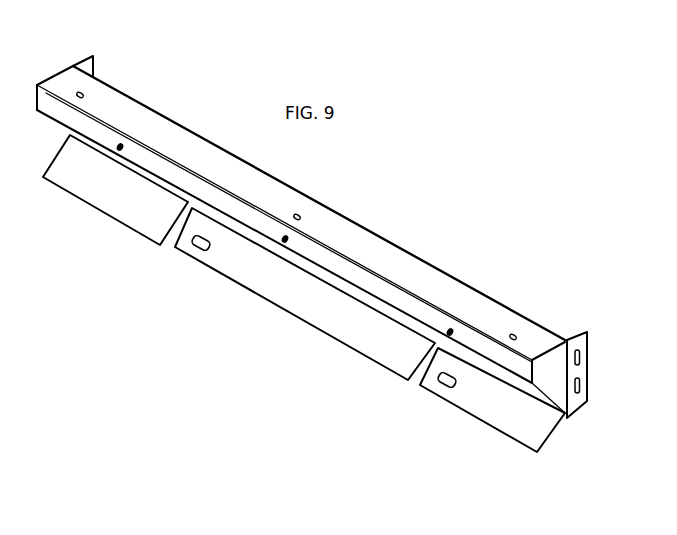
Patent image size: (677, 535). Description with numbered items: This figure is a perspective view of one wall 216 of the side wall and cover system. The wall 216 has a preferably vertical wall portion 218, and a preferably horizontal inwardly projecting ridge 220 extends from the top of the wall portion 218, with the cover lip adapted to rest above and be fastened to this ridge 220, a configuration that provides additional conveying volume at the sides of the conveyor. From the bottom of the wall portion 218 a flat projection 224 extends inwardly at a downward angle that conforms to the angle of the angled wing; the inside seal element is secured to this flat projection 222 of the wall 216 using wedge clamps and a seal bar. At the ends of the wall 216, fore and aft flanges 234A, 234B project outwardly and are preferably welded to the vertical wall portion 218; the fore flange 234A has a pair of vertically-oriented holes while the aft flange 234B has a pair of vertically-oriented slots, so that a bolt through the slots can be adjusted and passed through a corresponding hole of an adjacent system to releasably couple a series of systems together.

The wall 216 is at (427, 138).
The vertical wall portion 218 is at (550, 380).
The inwardly projecting ridge 220 is at (417, 280).
The flat projection 222 is at (258, 222).
The flat projection 224 is at (350, 325).
The fore flange 234A is at (93, 62).
The aft flange 234B is at (580, 370).